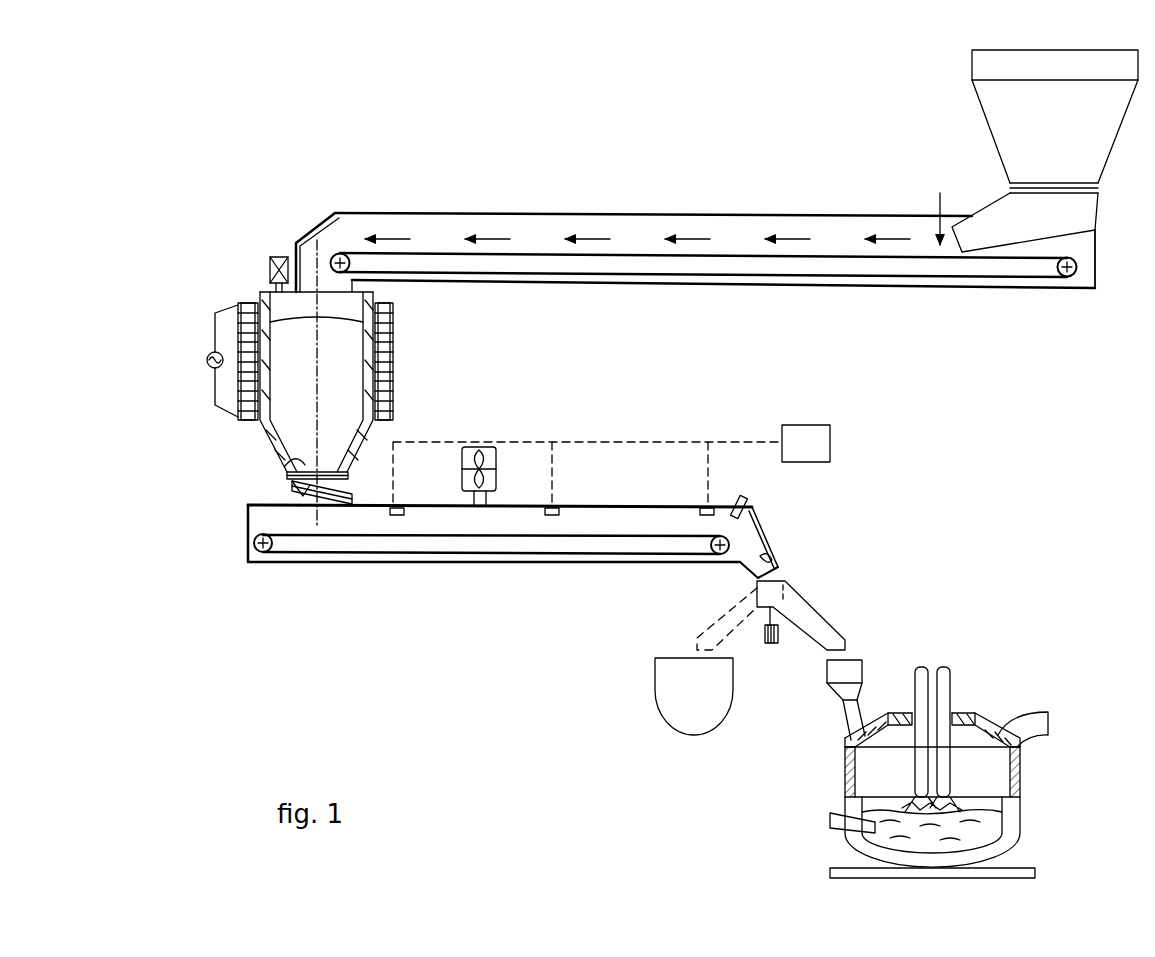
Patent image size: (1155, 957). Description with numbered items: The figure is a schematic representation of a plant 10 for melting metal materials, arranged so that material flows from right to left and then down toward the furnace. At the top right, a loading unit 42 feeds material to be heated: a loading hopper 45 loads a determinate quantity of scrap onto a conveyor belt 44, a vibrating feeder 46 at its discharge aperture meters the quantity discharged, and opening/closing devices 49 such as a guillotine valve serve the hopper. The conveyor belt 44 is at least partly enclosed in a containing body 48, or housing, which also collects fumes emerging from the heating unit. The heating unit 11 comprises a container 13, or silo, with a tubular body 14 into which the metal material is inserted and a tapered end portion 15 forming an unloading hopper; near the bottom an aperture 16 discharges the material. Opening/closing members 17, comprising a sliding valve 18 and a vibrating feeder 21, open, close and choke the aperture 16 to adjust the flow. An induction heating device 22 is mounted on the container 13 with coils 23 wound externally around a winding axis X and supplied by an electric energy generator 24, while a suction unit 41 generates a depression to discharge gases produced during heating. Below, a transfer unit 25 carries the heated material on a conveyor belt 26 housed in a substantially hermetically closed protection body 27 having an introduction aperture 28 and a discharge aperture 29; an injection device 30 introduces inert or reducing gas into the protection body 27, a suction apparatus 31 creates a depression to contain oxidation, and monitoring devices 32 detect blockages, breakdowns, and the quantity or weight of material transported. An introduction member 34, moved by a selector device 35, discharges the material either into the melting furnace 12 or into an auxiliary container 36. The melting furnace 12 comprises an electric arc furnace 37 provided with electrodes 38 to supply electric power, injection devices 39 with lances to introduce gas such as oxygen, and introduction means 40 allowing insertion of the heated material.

The plant 10 is at (280, 690).
The heating unit 11 is at (222, 298).
The melting furnace 12 is at (1016, 686).
The container 13 is at (265, 441).
The tubular body 14 is at (368, 383).
The end portion 15 is at (355, 445).
The aperture 16 is at (300, 477).
The opening/closing members 17 is at (283, 486).
The sliding valve 18 is at (312, 499).
The vibrating feeder 21 is at (341, 500).
The induction heating device 22 is at (400, 357).
The coils 23 is at (385, 316).
The electric energy generator 24 is at (207, 359).
The transfer unit 25 is at (530, 542).
The conveyor belt 26 is at (585, 535).
The protection body 27 is at (512, 507).
The introduction aperture 28 is at (380, 506).
The discharge aperture 29 is at (772, 560).
The injection device 30 is at (738, 505).
The suction apparatus 31 is at (488, 458).
The monitoring devices 32 is at (800, 424).
The introduction member 34 is at (830, 612).
The selector device 35 is at (773, 641).
The auxiliary container 36 is at (690, 722).
The electric arc furnace 37 is at (1010, 815).
The electrodes 38 is at (944, 678).
The injection devices 39 is at (840, 820).
The introduction means 40 is at (848, 670).
The suction unit 41 is at (278, 252).
The loading unit 42 is at (695, 224).
The conveyor belt 44 is at (635, 255).
The loading hopper 45 is at (985, 127).
The vibrating feeder 46 is at (980, 210).
The containing body 48 is at (762, 215).
The opening/closing devices 49 is at (1005, 185).
The winding axis X is at (317, 246).